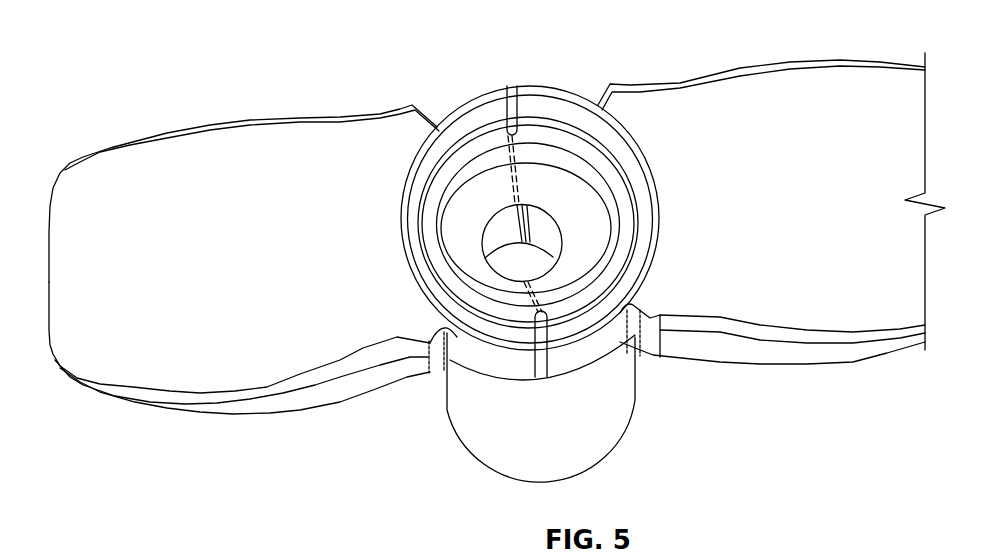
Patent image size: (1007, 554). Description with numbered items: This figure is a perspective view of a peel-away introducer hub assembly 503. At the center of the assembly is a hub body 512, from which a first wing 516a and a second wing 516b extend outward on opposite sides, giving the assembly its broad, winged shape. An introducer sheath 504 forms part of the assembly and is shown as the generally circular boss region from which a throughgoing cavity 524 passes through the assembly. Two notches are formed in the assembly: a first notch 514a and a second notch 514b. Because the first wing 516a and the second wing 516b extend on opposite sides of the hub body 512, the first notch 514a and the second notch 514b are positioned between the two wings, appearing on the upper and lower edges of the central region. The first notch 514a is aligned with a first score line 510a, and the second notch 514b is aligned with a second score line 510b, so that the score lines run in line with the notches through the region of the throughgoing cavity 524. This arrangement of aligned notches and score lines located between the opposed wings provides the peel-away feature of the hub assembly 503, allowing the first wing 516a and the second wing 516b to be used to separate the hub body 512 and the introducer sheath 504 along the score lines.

The peel-away introducer hub assembly 503 is at (487, 243).
The introducer sheath 504 is at (552, 193).
The first score line 510a is at (530, 293).
The second score line 510b is at (513, 183).
The hub body 512 is at (644, 312).
The first notch 514a is at (548, 362).
The second notch 514b is at (507, 85).
The first wing 516a is at (752, 117).
The second wing 516b is at (107, 213).
The throughgoing cavity 524 is at (493, 240).